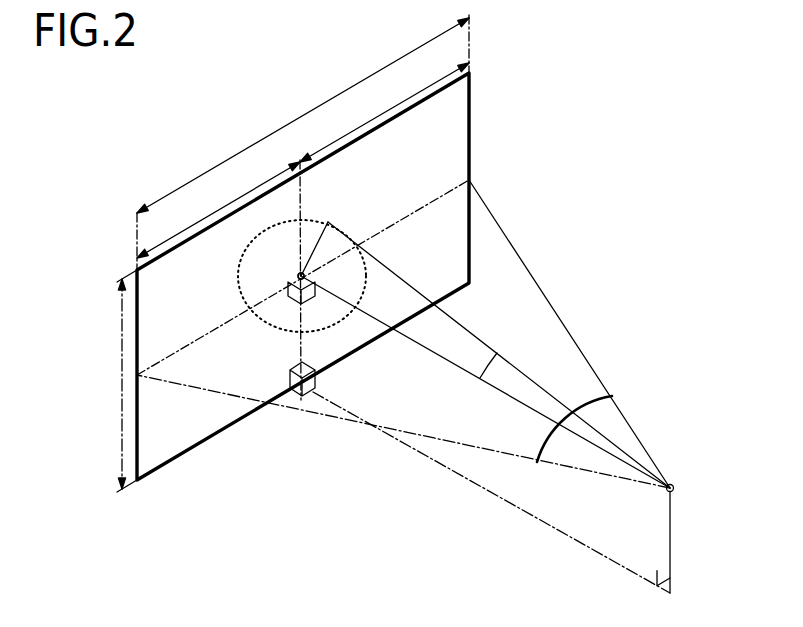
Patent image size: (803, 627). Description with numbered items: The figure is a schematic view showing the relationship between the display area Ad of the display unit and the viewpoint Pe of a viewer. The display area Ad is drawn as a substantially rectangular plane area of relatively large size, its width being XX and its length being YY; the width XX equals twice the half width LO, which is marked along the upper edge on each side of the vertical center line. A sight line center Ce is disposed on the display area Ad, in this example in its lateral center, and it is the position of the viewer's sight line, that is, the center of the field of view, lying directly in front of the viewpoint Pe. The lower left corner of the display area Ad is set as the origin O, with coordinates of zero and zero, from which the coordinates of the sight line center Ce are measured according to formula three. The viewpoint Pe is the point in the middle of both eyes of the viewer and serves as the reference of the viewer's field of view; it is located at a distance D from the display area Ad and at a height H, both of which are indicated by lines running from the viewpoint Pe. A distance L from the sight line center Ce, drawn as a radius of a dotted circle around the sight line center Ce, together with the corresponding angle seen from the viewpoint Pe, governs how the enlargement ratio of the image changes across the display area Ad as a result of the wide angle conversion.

The display area Ad is at (470, 121).
The viewpoint Pe is at (674, 484).
The distance from the sight line center L is at (302, 276).
The sight line center Ce is at (295, 276).
The origin O is at (141, 484).
The width of the display area XX is at (303, 142).
The length of the display area YY is at (110, 379).
The half width of the display area LO is at (303, 160).
The distance from the display area D is at (491, 492).
The height of the viewpoint H is at (677, 542).